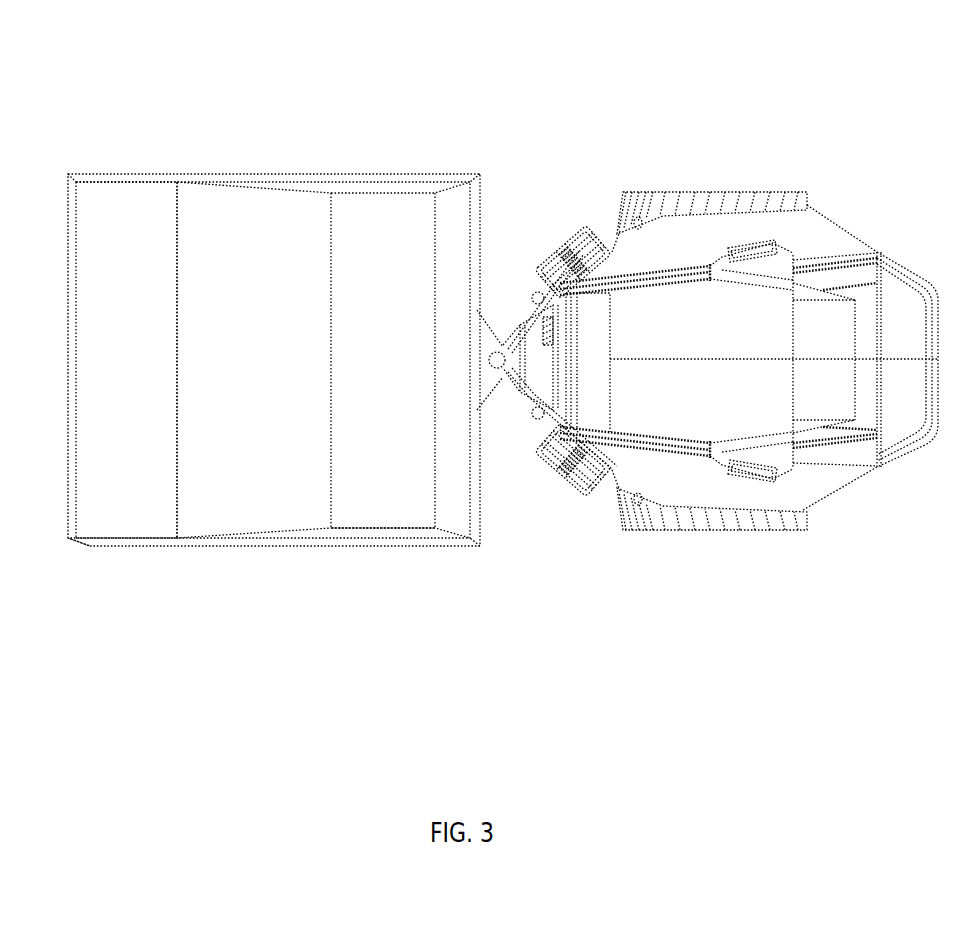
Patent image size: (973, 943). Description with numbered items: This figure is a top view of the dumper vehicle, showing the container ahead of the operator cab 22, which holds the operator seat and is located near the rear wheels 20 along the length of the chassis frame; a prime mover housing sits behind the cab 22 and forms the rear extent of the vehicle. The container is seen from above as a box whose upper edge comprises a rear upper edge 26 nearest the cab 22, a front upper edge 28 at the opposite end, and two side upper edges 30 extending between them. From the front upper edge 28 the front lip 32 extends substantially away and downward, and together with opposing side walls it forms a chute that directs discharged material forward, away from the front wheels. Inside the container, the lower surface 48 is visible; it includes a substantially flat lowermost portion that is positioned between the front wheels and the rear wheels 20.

The rear wheels 20 is at (646, 202).
The operator cab 22 is at (745, 317).
The rear upper edge 26 is at (477, 480).
The front upper edge 28 is at (177, 468).
The side upper edges 30 is at (402, 190).
The front lip 32 is at (148, 208).
The lower surface 48 is at (358, 510).